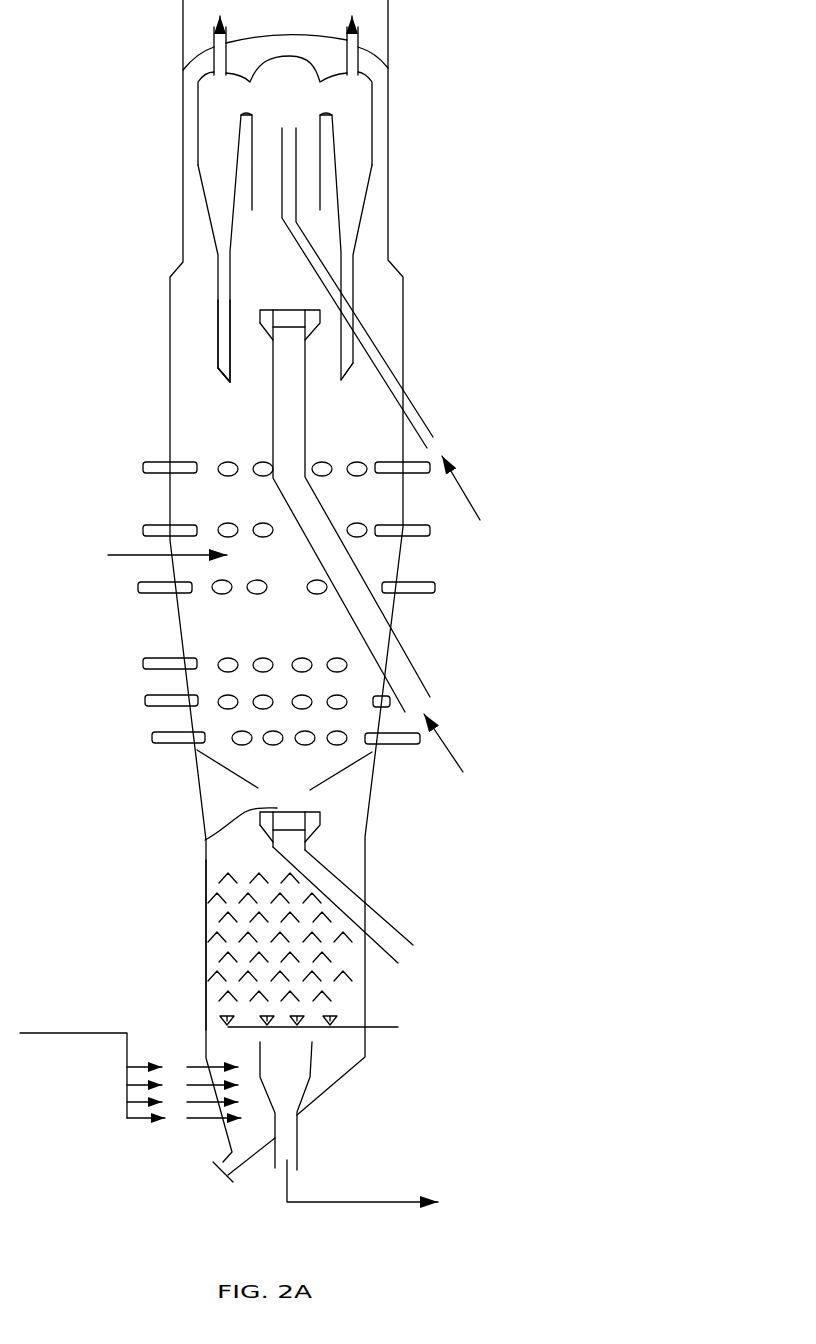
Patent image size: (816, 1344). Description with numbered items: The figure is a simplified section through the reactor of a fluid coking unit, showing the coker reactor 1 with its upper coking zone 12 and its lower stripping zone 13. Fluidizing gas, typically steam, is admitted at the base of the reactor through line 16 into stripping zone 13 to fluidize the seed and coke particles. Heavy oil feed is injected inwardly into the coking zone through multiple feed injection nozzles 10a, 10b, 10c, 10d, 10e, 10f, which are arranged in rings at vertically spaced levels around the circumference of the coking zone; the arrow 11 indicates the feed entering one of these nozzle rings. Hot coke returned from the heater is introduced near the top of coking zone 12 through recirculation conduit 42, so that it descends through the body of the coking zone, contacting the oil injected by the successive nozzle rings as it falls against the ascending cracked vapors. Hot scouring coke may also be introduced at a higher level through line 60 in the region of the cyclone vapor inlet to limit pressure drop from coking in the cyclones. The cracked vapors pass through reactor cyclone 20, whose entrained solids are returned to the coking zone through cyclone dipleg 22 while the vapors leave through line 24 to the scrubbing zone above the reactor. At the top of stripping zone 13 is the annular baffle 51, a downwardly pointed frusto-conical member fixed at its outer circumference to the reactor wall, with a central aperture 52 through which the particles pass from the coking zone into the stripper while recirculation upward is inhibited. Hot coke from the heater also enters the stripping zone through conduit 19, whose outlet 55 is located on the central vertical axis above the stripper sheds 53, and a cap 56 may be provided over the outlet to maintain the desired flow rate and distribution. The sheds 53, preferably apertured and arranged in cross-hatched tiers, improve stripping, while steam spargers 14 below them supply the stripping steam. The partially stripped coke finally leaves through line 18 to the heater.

The coker reactor 1 is at (403, 327).
The line 24 is at (207, 43).
The reactor cyclone 20 is at (198, 152).
The cyclone dipleg 22 is at (218, 337).
The coking zone 12 is at (232, 403).
The line 60 is at (422, 413).
The recirculation conduit 42 is at (417, 670).
The feed injection nozzle 10a is at (150, 462).
The feed injection nozzle 10b is at (150, 525).
The feed injection nozzle 10c is at (143, 591).
The feed injection nozzle 10d is at (143, 668).
The feed injection nozzle 10e is at (148, 705).
The feed injection nozzle 10f is at (155, 742).
The feed stream 11 is at (157, 555).
The central aperture 52 is at (275, 790).
The annular baffle 51 is at (333, 773).
The cap 56 is at (205, 840).
The outlet 55 is at (320, 835).
The conduit 19 is at (397, 930).
The stripping zone 13 is at (206, 920).
The stripper sheds 53 is at (207, 948).
The steam spargers 14 is at (328, 1020).
The line 16 is at (130, 1062).
The line 18 is at (298, 1140).